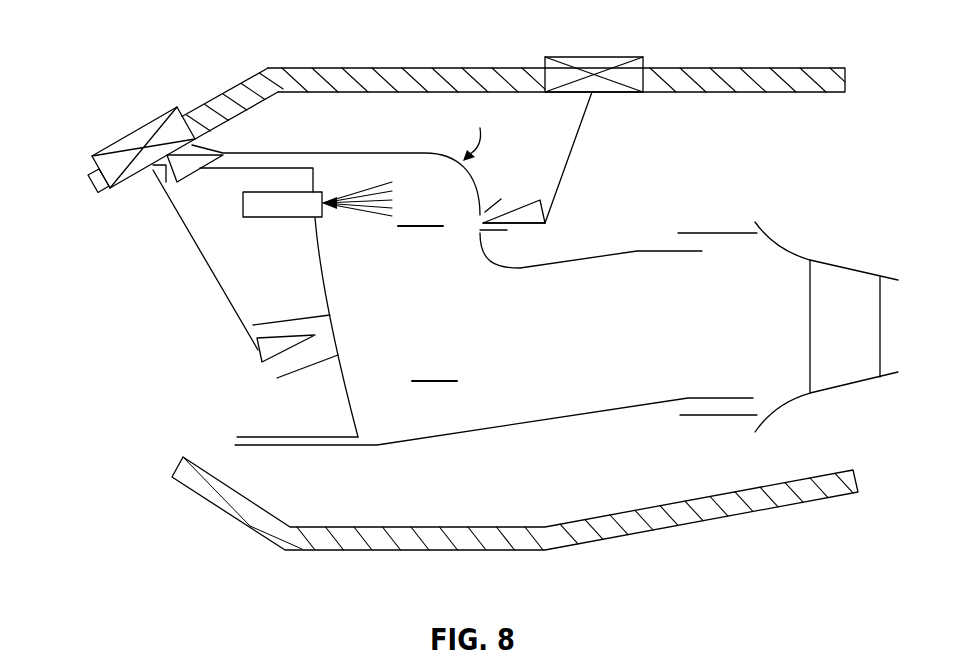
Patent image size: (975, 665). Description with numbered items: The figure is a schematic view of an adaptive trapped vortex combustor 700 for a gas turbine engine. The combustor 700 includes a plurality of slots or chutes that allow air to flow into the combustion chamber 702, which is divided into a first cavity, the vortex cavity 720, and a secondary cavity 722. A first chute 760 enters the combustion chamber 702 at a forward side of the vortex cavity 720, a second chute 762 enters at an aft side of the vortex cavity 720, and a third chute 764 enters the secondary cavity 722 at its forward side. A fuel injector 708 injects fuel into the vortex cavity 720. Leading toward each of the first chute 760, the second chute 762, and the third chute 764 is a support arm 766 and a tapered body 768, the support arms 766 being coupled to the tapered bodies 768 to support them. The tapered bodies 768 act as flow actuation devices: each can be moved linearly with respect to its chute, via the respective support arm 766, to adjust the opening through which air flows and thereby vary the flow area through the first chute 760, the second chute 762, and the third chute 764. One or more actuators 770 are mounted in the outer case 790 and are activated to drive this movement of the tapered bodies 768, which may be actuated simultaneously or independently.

The adaptive trapped vortex combustor 700 is at (116, 38).
The combustion chamber 702 is at (482, 128).
The fuel injector 708 is at (257, 220).
The vortex cavity 720 is at (420, 211).
The secondary cavity 722 is at (434, 366).
The first chute 760 is at (245, 150).
The second chute 762 is at (488, 208).
The third chute 764 is at (300, 367).
The support arm 766 is at (585, 122).
The tapered body 768 is at (537, 226).
The actuator 770 is at (140, 128).
The outer case 790 is at (720, 67).